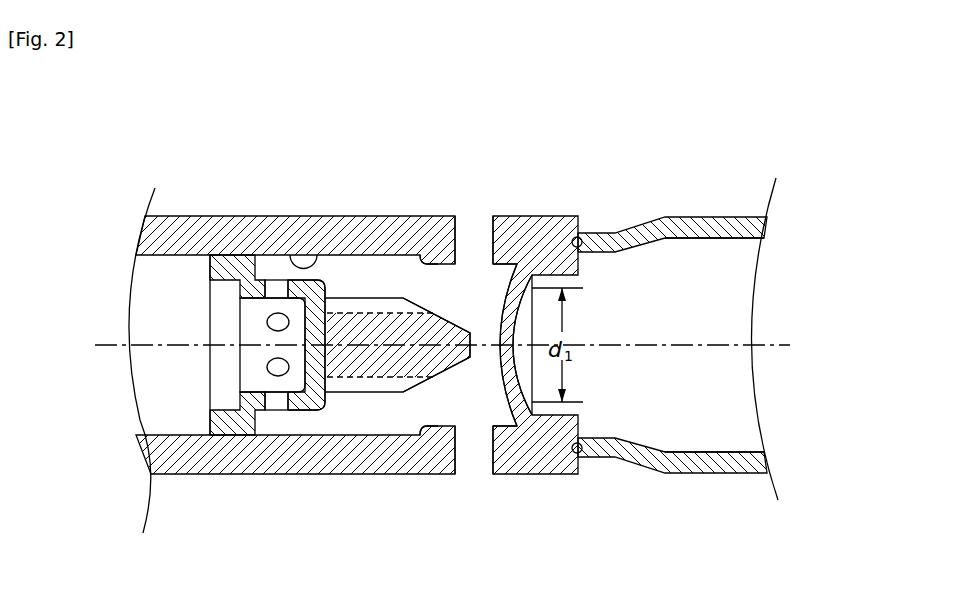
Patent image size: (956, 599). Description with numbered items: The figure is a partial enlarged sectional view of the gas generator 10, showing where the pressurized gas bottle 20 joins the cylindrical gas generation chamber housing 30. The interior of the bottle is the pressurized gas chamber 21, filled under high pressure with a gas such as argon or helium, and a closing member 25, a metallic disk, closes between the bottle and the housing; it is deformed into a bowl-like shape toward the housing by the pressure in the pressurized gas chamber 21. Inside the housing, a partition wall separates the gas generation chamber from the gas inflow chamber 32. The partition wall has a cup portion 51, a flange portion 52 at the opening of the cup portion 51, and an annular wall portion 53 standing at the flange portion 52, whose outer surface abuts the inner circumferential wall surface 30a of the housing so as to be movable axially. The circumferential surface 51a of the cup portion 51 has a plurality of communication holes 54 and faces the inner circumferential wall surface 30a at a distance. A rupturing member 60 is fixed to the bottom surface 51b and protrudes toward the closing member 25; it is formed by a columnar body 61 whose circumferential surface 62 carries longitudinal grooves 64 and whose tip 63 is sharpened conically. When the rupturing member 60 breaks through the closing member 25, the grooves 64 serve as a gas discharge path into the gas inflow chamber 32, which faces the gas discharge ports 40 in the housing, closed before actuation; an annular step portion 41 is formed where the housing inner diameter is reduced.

The gas generator 10 is at (556, 186).
The pressurized gas bottle 20 is at (704, 217).
The pressurized gas chamber 21 is at (654, 311).
The closing member 25 is at (507, 428).
The gas generation chamber housing 30 is at (163, 216).
The inner circumferential wall surface 30a is at (318, 258).
The gas inflow chamber 32 is at (436, 305).
The gas discharge ports 40 is at (475, 460).
The annular step portion 41 is at (422, 436).
The cup portion 51 is at (305, 373).
The circumferential surface 51a is at (307, 411).
The bottom surface 51b is at (324, 403).
The flange portion 52 is at (270, 260).
The annular wall portion 53 is at (225, 255).
The communication holes 54 is at (270, 324).
The rupturing member 60 is at (463, 369).
The columnar body 61 is at (445, 303).
The circumferential surface 62 is at (397, 332).
The tip 63 is at (483, 332).
The grooves 64 is at (345, 303).